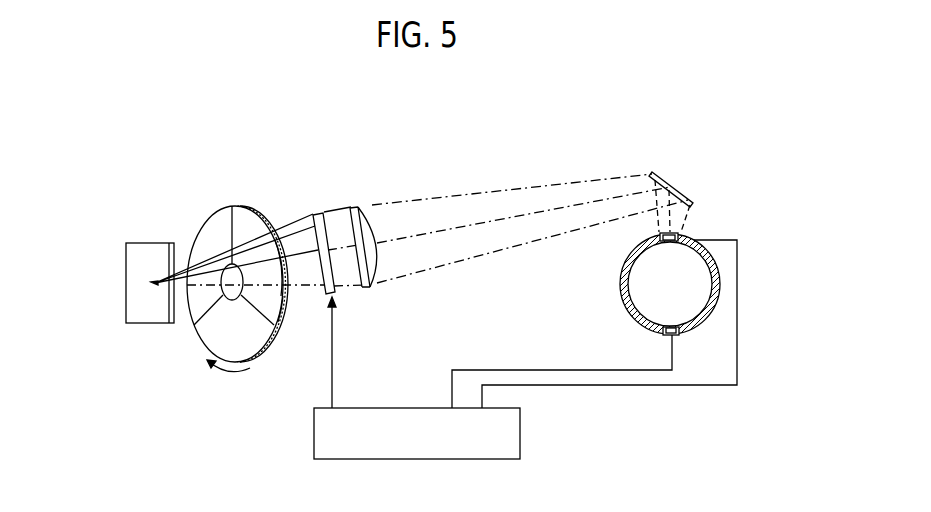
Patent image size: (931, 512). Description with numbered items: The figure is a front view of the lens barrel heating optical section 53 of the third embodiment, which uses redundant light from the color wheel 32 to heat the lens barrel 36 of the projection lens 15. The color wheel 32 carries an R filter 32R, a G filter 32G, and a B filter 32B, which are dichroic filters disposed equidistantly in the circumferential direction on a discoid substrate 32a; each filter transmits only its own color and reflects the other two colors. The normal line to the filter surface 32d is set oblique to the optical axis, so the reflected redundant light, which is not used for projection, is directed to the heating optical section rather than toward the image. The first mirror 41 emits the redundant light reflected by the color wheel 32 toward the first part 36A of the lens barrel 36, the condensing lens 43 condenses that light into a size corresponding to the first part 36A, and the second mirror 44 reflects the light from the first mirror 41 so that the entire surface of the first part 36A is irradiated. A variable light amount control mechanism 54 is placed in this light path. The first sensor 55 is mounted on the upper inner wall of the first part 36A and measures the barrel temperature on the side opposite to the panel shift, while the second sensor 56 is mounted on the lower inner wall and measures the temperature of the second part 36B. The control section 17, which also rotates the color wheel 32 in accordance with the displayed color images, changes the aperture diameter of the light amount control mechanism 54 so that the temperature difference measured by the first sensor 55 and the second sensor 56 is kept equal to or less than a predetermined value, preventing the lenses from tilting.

The lens barrel heating optical section 53 is at (388, 151).
The first mirror 41 is at (150, 243).
The color wheel 32 is at (225, 279).
The R filter 32R is at (239, 206).
The G filter 32G is at (235, 348).
The B filter 32B is at (198, 307).
The discoid substrate 32a is at (281, 296).
The filter surface 32d is at (286, 312).
The variable light amount control mechanism 54 is at (336, 290).
The condensing lens 43 is at (351, 209).
The second mirror 44 is at (666, 177).
The projection lens 15 is at (645, 300).
The lens barrel 36 is at (628, 313).
The first part 36A is at (680, 226).
The second part 36B is at (677, 340).
The first sensor 55 is at (657, 238).
The second sensor 56 is at (564, 366).
The control section 17 is at (386, 408).